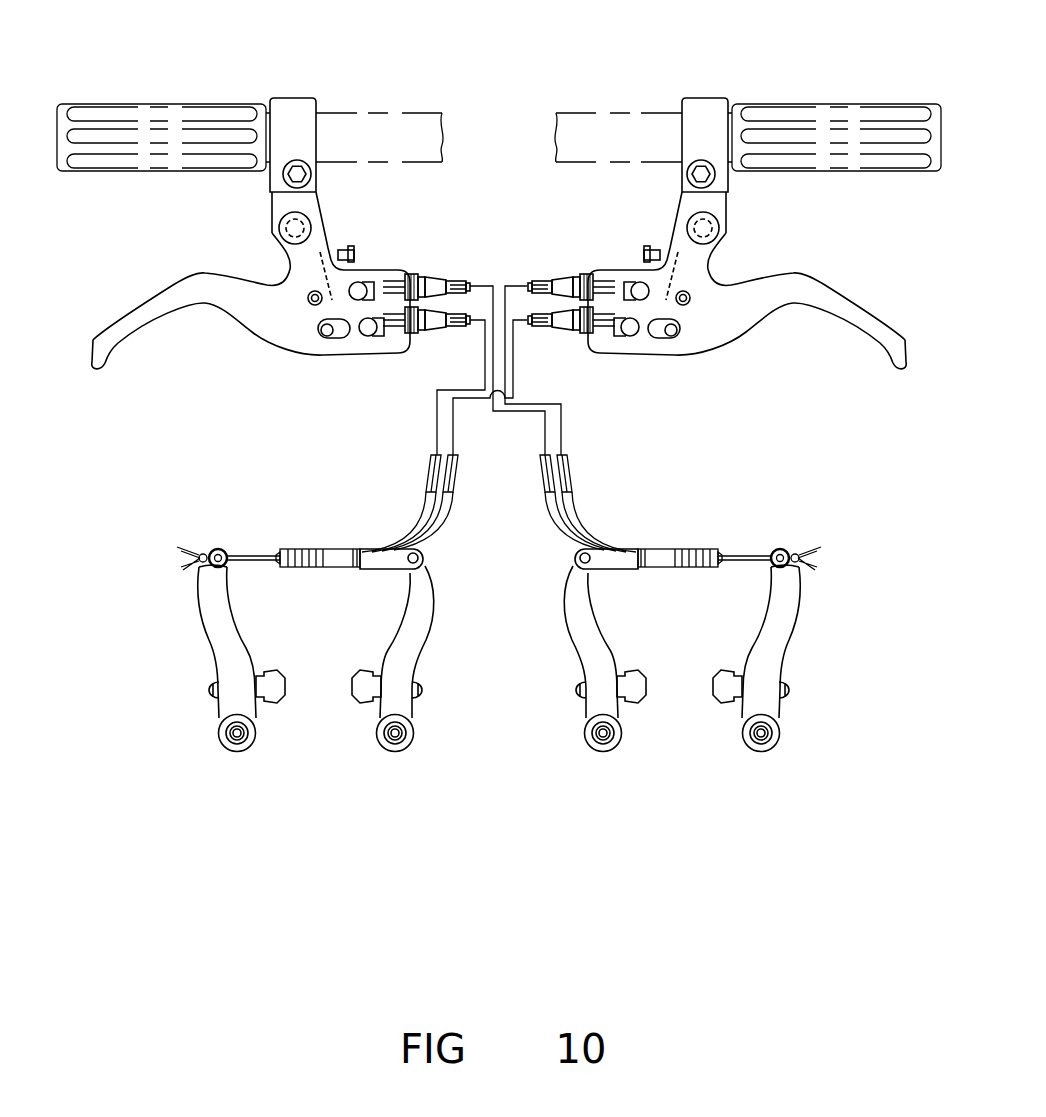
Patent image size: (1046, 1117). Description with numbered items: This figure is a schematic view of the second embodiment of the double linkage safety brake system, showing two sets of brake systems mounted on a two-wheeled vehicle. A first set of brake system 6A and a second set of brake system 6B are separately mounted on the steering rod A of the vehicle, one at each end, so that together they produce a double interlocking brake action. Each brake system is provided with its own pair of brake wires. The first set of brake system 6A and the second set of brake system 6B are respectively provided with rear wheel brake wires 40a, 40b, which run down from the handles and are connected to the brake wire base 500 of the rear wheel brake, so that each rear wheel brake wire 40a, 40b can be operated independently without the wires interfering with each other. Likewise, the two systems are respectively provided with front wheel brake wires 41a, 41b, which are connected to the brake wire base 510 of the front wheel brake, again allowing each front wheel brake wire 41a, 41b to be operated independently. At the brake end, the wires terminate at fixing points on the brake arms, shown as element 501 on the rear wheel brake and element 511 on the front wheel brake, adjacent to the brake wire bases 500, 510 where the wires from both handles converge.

The steering rod A is at (379, 127).
The first set of brake system 6A is at (387, 224).
The second set of brake system 6B is at (632, 224).
The rear wheel brake wire 40a is at (519, 280).
The rear wheel brake wire 40b is at (479, 280).
The front wheel brake wire 41a is at (523, 327).
The front wheel brake wire 41b is at (475, 327).
The brake wire base 500 is at (607, 561).
The first brake caliper cable fixing bolt 501 is at (779, 547).
The brake wire base 510 is at (388, 561).
The second brake caliper cable fixing bolt 511 is at (219, 547).